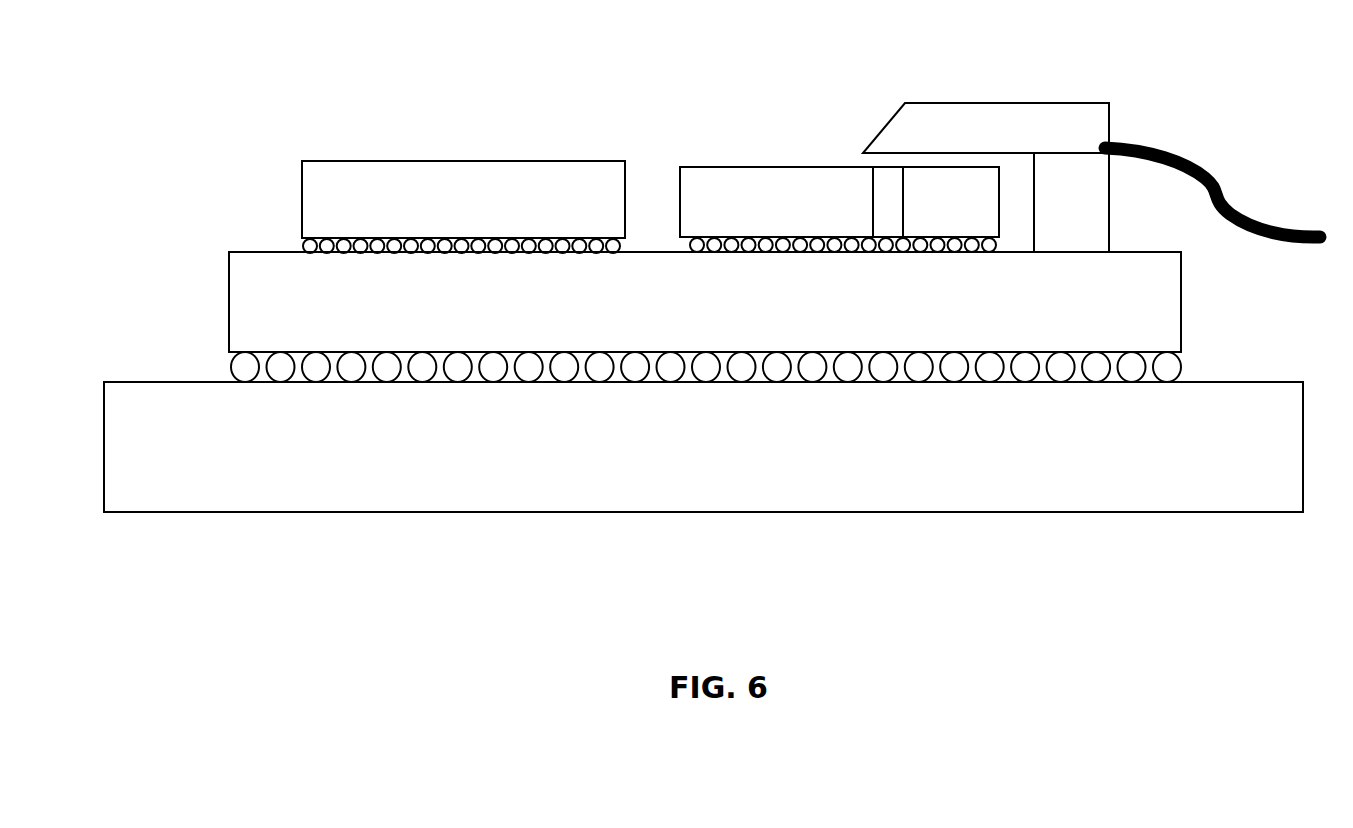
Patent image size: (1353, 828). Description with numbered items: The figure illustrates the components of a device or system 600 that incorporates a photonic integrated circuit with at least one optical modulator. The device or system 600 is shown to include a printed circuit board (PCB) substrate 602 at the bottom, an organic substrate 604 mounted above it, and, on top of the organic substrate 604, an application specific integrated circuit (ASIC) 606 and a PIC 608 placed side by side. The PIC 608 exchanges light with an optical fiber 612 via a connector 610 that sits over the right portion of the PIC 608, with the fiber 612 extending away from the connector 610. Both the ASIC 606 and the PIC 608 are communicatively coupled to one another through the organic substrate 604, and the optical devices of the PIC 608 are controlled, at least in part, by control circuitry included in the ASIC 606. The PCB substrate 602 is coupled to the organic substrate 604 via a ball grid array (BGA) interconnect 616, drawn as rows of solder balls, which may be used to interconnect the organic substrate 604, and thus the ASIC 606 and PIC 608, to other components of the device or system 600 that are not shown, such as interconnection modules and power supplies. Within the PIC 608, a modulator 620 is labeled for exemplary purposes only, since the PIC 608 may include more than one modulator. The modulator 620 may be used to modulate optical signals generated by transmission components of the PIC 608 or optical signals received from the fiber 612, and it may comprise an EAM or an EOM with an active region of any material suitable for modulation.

The device or system 600 is at (341, 74).
The printed circuit board (PCB) substrate 602 is at (703, 447).
The organic substrate 604 is at (705, 302).
The application specific integrated circuit (ASIC) 606 is at (463, 199).
The photonic integrated circuit (PIC) 608 is at (839, 202).
The connector 610 is at (986, 177).
The optical fiber 612 is at (1185, 156).
The ball grid array (BGA) interconnect 616 is at (303, 246).
The modulator 620 is at (887, 205).